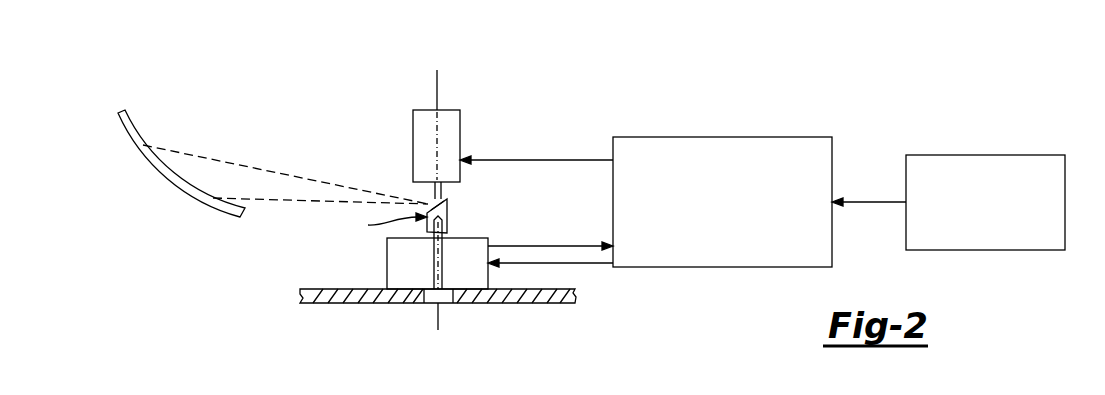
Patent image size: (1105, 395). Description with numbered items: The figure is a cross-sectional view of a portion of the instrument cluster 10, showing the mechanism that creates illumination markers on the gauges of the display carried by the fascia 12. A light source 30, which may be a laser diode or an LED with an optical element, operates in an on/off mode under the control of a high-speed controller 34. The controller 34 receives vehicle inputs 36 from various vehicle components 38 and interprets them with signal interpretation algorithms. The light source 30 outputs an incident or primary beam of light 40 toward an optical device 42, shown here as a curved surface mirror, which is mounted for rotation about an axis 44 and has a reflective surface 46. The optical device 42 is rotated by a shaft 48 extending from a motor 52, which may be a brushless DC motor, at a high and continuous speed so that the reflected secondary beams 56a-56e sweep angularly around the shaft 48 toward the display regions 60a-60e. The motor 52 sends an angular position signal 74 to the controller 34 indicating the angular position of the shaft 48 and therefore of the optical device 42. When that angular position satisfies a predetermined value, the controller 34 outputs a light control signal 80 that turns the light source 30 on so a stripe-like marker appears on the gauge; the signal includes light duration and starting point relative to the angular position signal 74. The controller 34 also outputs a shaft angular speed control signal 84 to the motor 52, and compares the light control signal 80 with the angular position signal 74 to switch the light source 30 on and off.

The instrument cluster 10 is at (630, 75).
The fascia 12 is at (535, 304).
The light source 30 is at (452, 128).
The controller 34 is at (722, 138).
The vehicle inputs 36 is at (870, 202).
The vehicle components 38 is at (1022, 155).
The primary beam of light 40 is at (433, 197).
The optical device 42 is at (448, 208).
The axis 44 is at (438, 85).
The reflective surface 46 is at (385, 225).
The shaft 48 is at (433, 253).
The motor 52 is at (393, 260).
The secondary beams 56a-56e is at (222, 175).
The detection zones / windshield segments 60a-60e is at (133, 122).
The angular position signal 74 is at (535, 245).
The light control signal 80 is at (537, 160).
The shaft angular speed control signal 84 is at (590, 263).